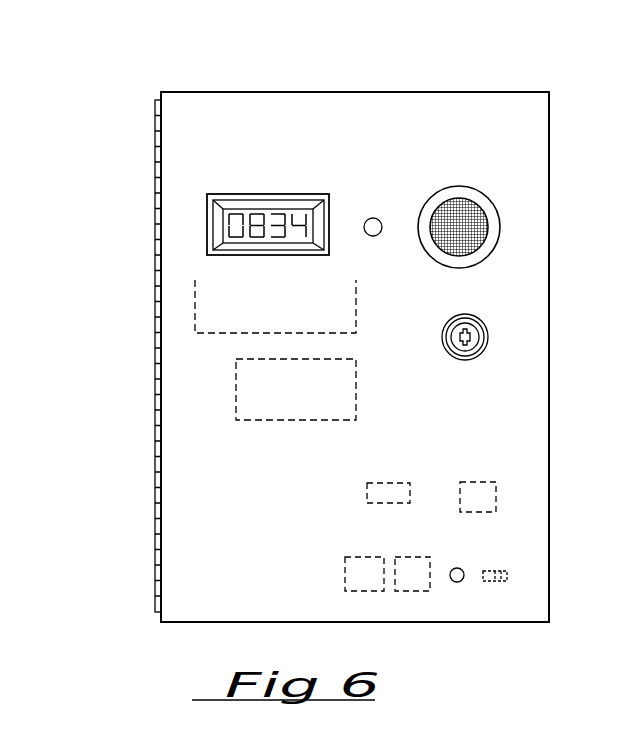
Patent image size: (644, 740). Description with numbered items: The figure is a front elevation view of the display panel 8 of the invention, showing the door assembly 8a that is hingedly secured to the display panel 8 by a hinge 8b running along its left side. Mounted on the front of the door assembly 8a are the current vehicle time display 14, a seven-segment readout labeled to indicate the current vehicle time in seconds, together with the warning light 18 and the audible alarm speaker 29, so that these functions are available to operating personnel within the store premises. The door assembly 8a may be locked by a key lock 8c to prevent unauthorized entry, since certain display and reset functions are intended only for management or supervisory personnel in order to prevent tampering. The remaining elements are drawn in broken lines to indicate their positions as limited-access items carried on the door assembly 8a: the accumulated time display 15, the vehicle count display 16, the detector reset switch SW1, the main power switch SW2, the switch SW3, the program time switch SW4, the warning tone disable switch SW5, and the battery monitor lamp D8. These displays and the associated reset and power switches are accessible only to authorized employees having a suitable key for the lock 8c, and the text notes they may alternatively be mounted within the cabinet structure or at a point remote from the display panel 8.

The display panel 8 is at (300, 92).
The door assembly 8a is at (488, 98).
The hinge 8b is at (160, 142).
The key lock 8c is at (479, 337).
The current vehicle time display 14 is at (228, 194).
The accumulated time display 15 is at (194, 293).
The vehicle count display 16 is at (357, 392).
The warning light 18 is at (375, 218).
The audible alarm speaker 29 is at (456, 189).
The detector reset switch SW1 is at (344, 578).
The main power switch SW2 is at (510, 572).
The switch 3 SW3 is at (405, 588).
The program time switch SW4 is at (381, 487).
The warning tone disable switch SW5 is at (492, 494).
The battery monitor lamp D8 is at (460, 583).